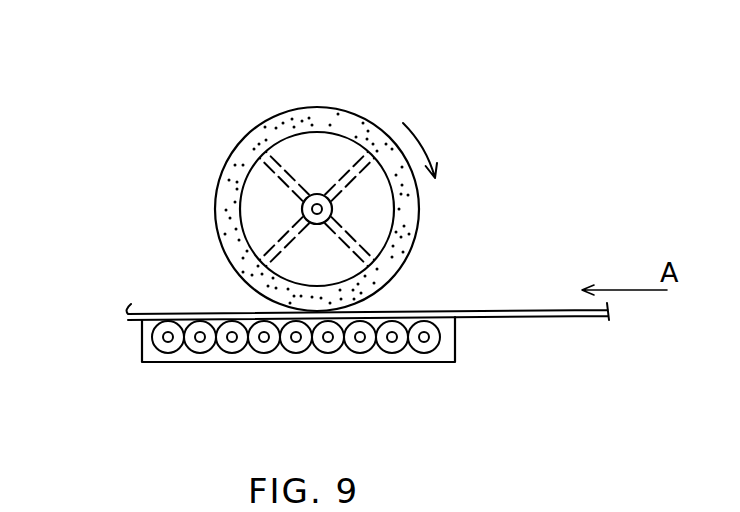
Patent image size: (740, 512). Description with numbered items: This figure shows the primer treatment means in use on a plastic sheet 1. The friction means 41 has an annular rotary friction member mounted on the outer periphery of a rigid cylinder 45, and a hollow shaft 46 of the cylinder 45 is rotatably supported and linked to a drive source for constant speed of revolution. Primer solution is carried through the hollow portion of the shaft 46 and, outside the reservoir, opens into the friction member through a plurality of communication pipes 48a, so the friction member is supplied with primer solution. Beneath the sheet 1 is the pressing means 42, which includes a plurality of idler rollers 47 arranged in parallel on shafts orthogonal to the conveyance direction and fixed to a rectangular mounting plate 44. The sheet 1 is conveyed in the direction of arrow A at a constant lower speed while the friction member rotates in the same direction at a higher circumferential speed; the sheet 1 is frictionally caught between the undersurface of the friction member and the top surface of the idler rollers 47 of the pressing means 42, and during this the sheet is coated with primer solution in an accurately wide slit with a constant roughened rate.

The friction means 41 is at (215, 225).
The cylinder 45 is at (312, 157).
The shaft 46 is at (318, 194).
The communication pipe 48a is at (283, 170).
The plastic sheet 1 is at (527, 310).
The pressing means 42 is at (352, 375).
The mounting plate 44 is at (455, 338).
The idler roller 47 is at (391, 345).